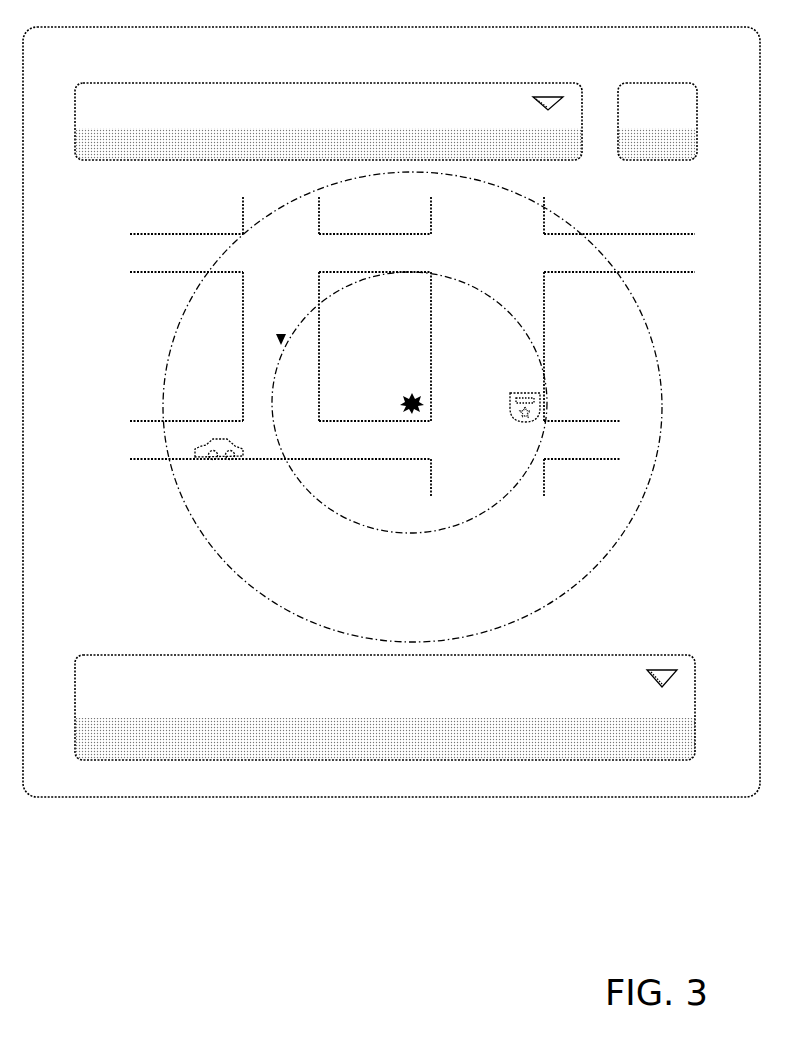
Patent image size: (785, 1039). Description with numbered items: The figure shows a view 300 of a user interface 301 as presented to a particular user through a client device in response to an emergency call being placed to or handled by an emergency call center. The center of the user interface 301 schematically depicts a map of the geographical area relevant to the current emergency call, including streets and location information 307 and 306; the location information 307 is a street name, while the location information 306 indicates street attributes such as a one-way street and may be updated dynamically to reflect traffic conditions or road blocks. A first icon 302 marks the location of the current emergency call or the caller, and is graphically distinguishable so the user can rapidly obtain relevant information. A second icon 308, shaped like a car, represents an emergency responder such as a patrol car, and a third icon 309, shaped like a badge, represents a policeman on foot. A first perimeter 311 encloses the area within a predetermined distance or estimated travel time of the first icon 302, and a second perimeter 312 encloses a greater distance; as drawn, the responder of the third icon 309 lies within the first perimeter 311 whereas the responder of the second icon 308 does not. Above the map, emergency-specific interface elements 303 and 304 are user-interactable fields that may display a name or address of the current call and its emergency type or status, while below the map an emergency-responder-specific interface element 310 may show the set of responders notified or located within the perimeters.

The view 300 is at (391, 447).
The user interface 301 is at (391, 412).
The first icon 302 is at (398, 393).
The emergency-specific interface element 303 is at (328, 121).
The emergency-specific interface element 304 is at (657, 121).
The location information 306 is at (281, 334).
The location information 307 is at (303, 460).
The second icon 308 is at (206, 440).
The third icon 309 is at (513, 395).
The emergency-responder-specific interface element 310 is at (385, 707).
The first perimeter 311 is at (409, 410).
The second perimeter 312 is at (412, 407).